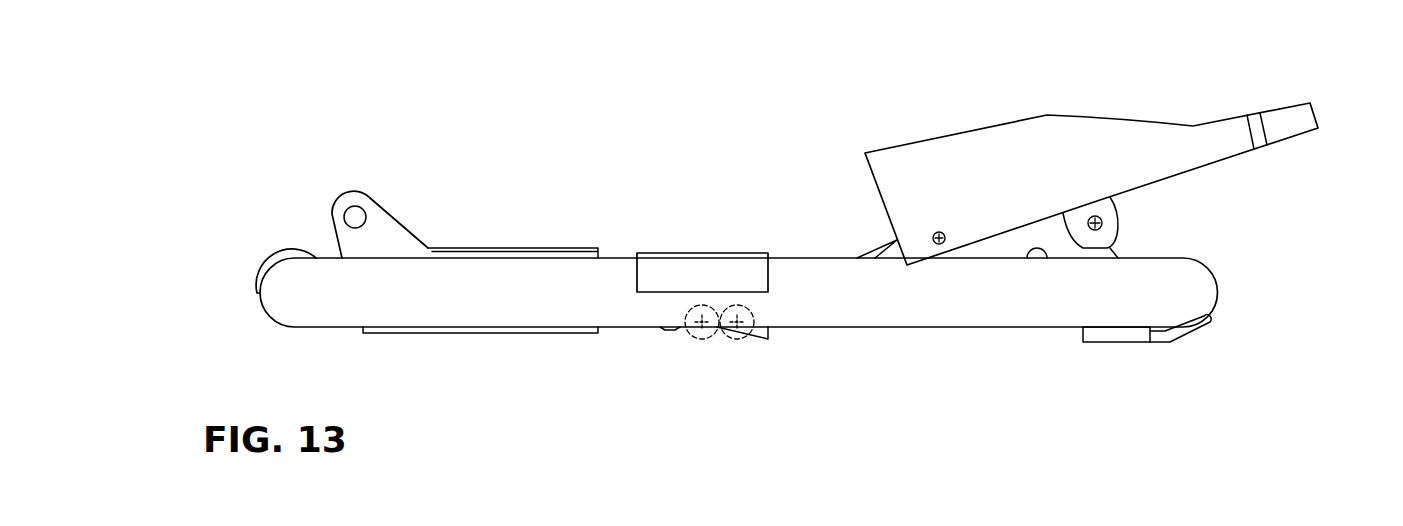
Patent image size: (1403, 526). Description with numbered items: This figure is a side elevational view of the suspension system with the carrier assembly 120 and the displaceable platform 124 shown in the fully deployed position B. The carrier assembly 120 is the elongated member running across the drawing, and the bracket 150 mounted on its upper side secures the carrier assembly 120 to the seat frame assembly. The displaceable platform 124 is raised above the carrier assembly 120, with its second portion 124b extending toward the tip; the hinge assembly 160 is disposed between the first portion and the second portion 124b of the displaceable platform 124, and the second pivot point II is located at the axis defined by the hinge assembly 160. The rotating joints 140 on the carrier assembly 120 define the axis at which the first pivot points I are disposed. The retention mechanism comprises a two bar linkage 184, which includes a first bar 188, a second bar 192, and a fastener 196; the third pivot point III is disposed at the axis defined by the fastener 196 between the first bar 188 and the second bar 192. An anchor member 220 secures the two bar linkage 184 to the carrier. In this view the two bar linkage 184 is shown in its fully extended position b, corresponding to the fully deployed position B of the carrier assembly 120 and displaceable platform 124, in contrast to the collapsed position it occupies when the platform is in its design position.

The carrier assembly 120 is at (580, 295).
The bracket 150 is at (373, 235).
The rotating joints 140 is at (725, 305).
The displaceable platform 124 is at (937, 170).
The second portion 124b is at (1040, 168).
The hinge assembly 160 is at (937, 235).
The second bar 192 is at (1108, 204).
The fastener 196 is at (1088, 232).
The two bar linkage 184 is at (1130, 223).
The first bar 188 is at (1120, 257).
The anchor member 220 is at (1092, 347).
The first pivot points I is at (748, 322).
The second pivot point II is at (938, 232).
The third pivot point III is at (1099, 216).
The fully deployed position B is at (1200, 82).
The fully extended position b is at (1215, 230).